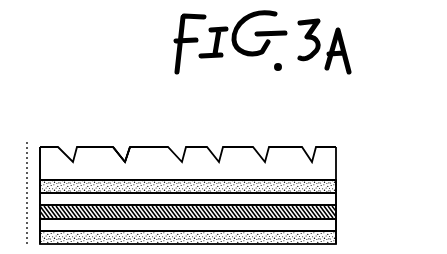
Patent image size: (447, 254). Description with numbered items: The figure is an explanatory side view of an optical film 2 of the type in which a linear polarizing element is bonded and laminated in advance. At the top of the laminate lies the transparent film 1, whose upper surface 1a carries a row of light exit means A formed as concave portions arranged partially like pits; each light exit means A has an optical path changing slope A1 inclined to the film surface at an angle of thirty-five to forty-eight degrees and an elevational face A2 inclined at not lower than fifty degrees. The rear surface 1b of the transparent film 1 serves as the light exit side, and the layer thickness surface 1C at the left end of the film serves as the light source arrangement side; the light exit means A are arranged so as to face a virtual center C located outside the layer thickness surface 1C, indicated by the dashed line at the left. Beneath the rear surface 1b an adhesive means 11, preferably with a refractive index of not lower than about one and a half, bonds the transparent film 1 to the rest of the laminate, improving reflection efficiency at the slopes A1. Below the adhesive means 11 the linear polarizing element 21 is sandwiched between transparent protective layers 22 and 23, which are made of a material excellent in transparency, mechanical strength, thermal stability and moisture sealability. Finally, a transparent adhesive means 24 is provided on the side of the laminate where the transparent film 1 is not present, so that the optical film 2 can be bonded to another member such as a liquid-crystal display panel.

The optical film (transparent film) 1 is at (197, 177).
The surface 1a is at (299, 147).
The rear surface 1b is at (302, 180).
The layer thickness surface 1C is at (40, 154).
The light exit means A is at (130, 147).
The optical path changing slope A1 is at (119, 148).
The elevational face A2 is at (132, 149).
The optical film 2 is at (219, 203).
The adhesive means 11 is at (336, 190).
The transparent protective layer 22 is at (336, 200).
The linear polarizing element 21 is at (336, 213).
The transparent protective layer 23 is at (336, 229).
The transparent adhesive means 24 is at (200, 239).
The virtual center C is at (26, 188).